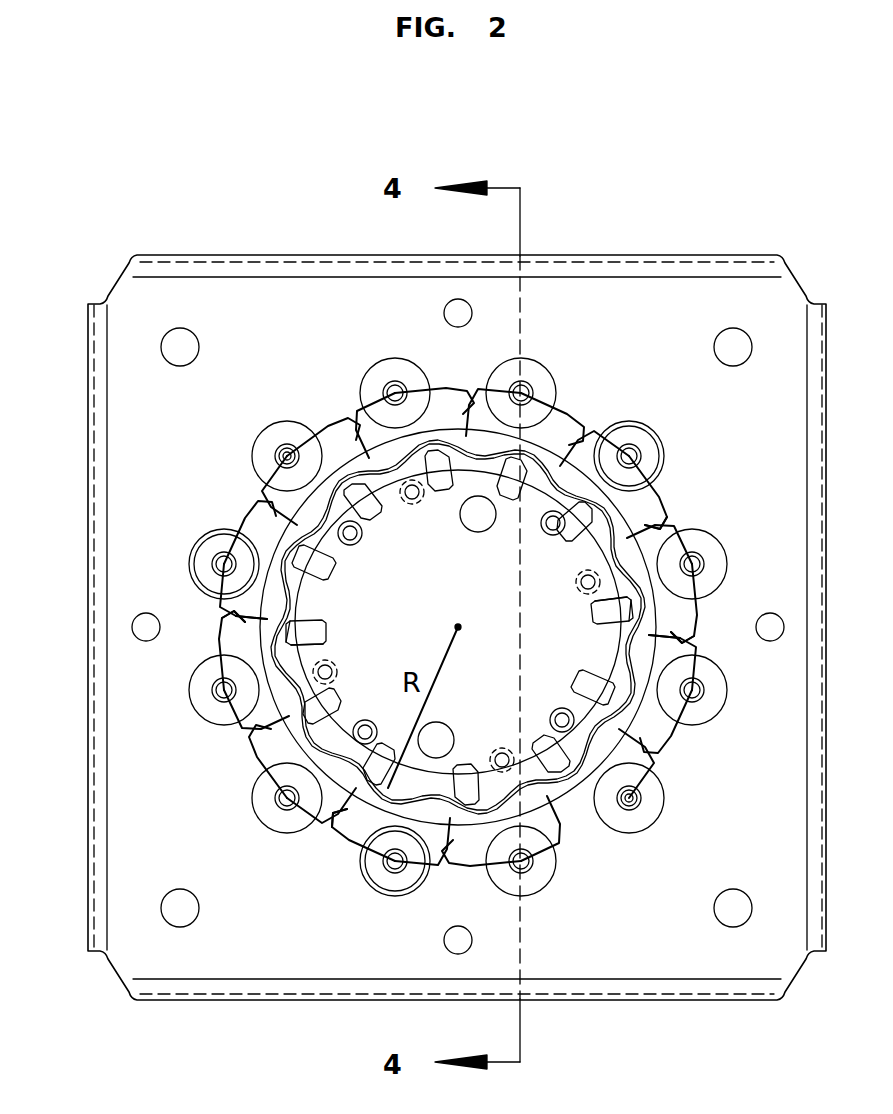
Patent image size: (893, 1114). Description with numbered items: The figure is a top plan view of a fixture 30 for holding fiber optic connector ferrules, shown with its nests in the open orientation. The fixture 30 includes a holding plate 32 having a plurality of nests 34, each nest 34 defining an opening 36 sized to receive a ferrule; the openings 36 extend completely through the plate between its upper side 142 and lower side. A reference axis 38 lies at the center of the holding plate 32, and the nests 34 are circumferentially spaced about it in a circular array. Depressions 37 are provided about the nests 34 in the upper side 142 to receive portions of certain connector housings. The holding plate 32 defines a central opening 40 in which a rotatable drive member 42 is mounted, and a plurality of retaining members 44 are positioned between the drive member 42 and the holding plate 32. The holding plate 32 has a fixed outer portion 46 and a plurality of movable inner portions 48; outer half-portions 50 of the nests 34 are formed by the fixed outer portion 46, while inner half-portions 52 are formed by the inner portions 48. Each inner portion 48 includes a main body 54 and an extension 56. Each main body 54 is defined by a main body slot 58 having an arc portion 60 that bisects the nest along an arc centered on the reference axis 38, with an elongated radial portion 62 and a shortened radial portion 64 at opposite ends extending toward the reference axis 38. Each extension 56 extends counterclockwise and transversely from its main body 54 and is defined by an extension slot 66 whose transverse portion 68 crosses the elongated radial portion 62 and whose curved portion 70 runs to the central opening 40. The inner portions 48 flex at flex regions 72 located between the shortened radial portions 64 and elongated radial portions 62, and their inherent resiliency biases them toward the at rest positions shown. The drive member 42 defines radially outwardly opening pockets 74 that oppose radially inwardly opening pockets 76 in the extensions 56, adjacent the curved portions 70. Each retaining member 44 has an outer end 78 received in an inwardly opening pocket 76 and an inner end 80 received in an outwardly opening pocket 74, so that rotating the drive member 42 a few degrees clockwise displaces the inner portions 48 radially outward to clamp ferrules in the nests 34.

The fixture 30 is at (667, 224).
The holding plate 32 is at (712, 255).
The nest 34 is at (285, 444).
The opening 36 is at (293, 451).
The depression 37 is at (205, 567).
The reference axis 38 is at (458, 627).
The central opening 40 is at (288, 692).
The drive member 42 is at (352, 742).
The retaining member 44 is at (312, 580).
The fixed outer portion 46 is at (88, 470).
The inner portion 48 is at (257, 495).
The outer half-portion 50 is at (283, 452).
The inner half-portion 52 is at (298, 457).
The main body 54 is at (262, 487).
The extension 56 is at (316, 532).
The main body slot 58 is at (668, 484).
The arc portion 60 is at (620, 448).
The elongated radial portion 62 is at (545, 545).
The shortened radial portion 64 is at (660, 513).
The extension slot 66 is at (549, 436).
The transverse portion 68 is at (528, 470).
The curved portion 70 is at (500, 442).
The flex region 72 is at (348, 418).
The radially outwardly opening pocket 74 is at (310, 632).
The radially inwardly opening pocket 76 is at (290, 624).
The outer end 78 is at (295, 650).
The inner end 80 is at (308, 644).
The upper side 142 is at (664, 370).